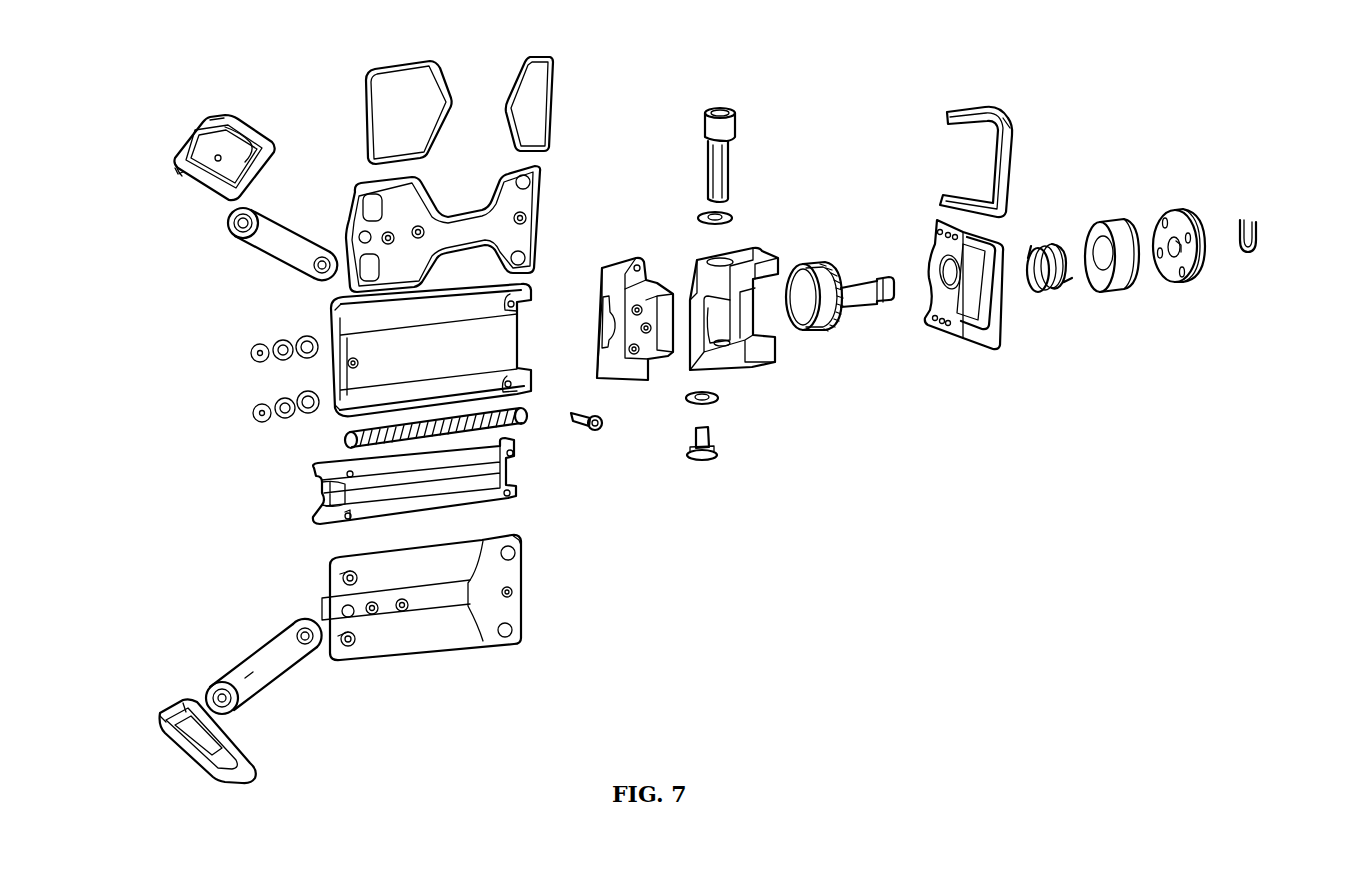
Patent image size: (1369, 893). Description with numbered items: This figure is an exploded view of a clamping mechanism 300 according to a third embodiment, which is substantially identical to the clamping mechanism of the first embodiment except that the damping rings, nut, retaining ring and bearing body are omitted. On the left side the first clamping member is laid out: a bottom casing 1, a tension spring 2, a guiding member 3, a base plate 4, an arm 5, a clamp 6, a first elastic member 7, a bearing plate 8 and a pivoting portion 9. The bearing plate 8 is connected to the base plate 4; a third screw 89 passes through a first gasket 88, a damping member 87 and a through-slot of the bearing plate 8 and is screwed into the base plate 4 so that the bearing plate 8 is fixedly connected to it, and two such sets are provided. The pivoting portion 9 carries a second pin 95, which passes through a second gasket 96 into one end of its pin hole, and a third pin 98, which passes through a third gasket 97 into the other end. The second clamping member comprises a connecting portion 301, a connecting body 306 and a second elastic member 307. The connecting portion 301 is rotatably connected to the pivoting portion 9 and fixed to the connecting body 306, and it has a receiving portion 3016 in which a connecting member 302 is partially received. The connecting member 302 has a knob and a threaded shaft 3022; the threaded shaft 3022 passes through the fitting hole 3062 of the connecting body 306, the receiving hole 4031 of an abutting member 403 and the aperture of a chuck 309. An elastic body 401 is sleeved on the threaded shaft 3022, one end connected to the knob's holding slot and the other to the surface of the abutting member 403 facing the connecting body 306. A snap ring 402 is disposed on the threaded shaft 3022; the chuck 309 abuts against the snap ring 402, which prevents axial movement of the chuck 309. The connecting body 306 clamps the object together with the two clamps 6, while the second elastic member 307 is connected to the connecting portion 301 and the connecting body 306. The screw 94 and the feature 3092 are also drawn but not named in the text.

The clamping mechanism 300 is at (712, 22).
The bottom casing 1 is at (330, 323).
The tension spring 2 is at (520, 418).
The guiding member 3 is at (322, 515).
The base plate 4 is at (418, 648).
The arm 5 is at (268, 241).
The clamp 6 is at (207, 132).
The first elastic member 7 is at (383, 95).
The bearing plate 8 is at (352, 194).
The pivoting portion 9 is at (613, 263).
The damping member 87 is at (279, 418).
The first gasket 88 is at (307, 414).
The third screw 89 is at (243, 413).
The screw 94 is at (588, 428).
The second pin 95 is at (722, 163).
The second gasket 96 is at (721, 213).
The third gasket 97 is at (690, 435).
The third pin 98 is at (690, 396).
The connecting portion 301 is at (741, 380).
The receiving portion 3016 is at (768, 312).
The connecting member 302 is at (828, 337).
The threaded shaft 3022 is at (887, 303).
The connecting body 306 is at (994, 348).
The fitting hole 3062 is at (947, 280).
The second elastic member 307 is at (964, 107).
The chuck 309 is at (1184, 201).
The disk flange 3092 is at (1203, 266).
The elastic body 401 is at (1059, 287).
The snap ring 402 is at (1250, 254).
The abutting member 403 is at (1116, 215).
The receiving hole 4031 is at (1106, 264).